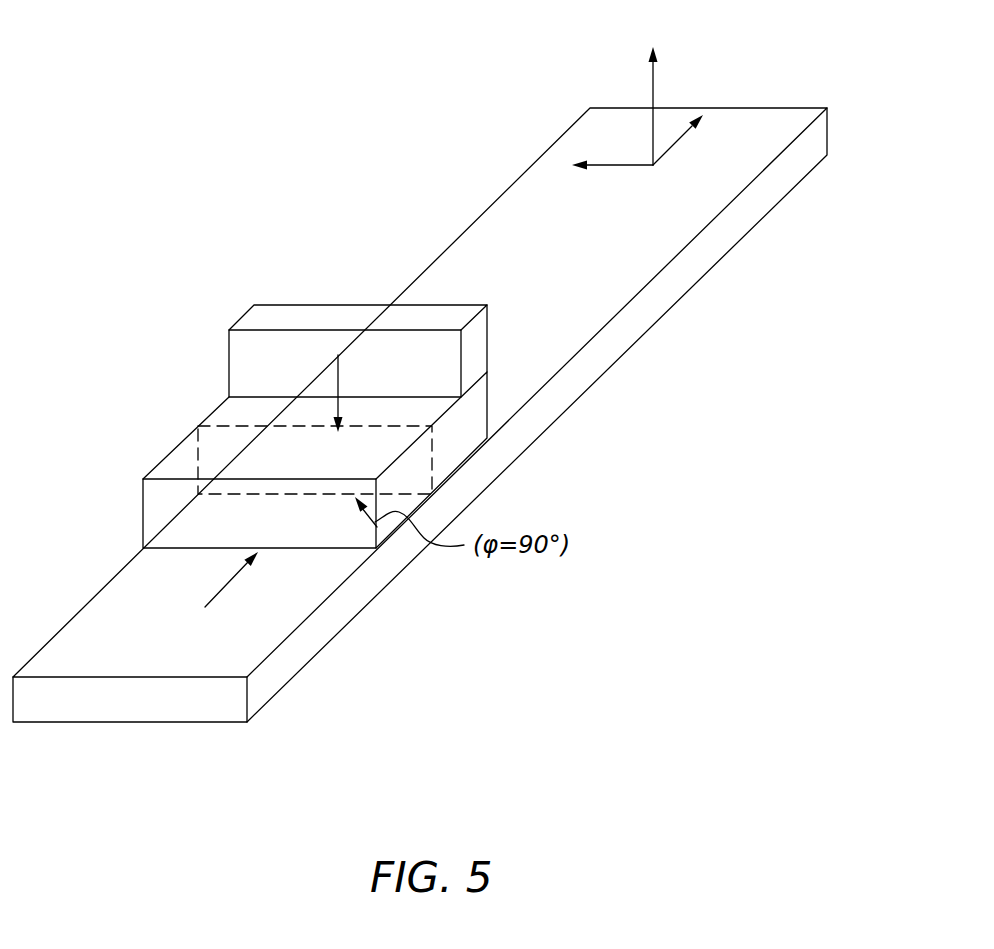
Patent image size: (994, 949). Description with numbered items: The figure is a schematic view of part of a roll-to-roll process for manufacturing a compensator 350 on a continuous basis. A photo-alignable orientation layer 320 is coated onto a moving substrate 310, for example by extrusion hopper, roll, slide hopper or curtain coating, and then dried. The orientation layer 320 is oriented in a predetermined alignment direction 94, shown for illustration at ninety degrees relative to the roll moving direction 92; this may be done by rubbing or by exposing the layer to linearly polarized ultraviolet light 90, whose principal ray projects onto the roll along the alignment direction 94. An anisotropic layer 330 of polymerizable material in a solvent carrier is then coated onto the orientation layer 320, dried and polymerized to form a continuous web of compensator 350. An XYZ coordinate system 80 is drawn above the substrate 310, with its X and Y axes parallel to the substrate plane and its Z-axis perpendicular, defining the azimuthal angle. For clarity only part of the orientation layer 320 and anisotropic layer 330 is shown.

The XYZ coordinate system 80 is at (536, 57).
The linearly polarized ultraviolet light 90 is at (336, 383).
The roll moving direction 92 is at (222, 590).
The alignment direction 94 is at (377, 527).
The moving substrate 310 is at (116, 603).
The orientation layer 320 is at (143, 515).
The anisotropic layer 330 is at (268, 315).
The compensator 350 is at (160, 400).